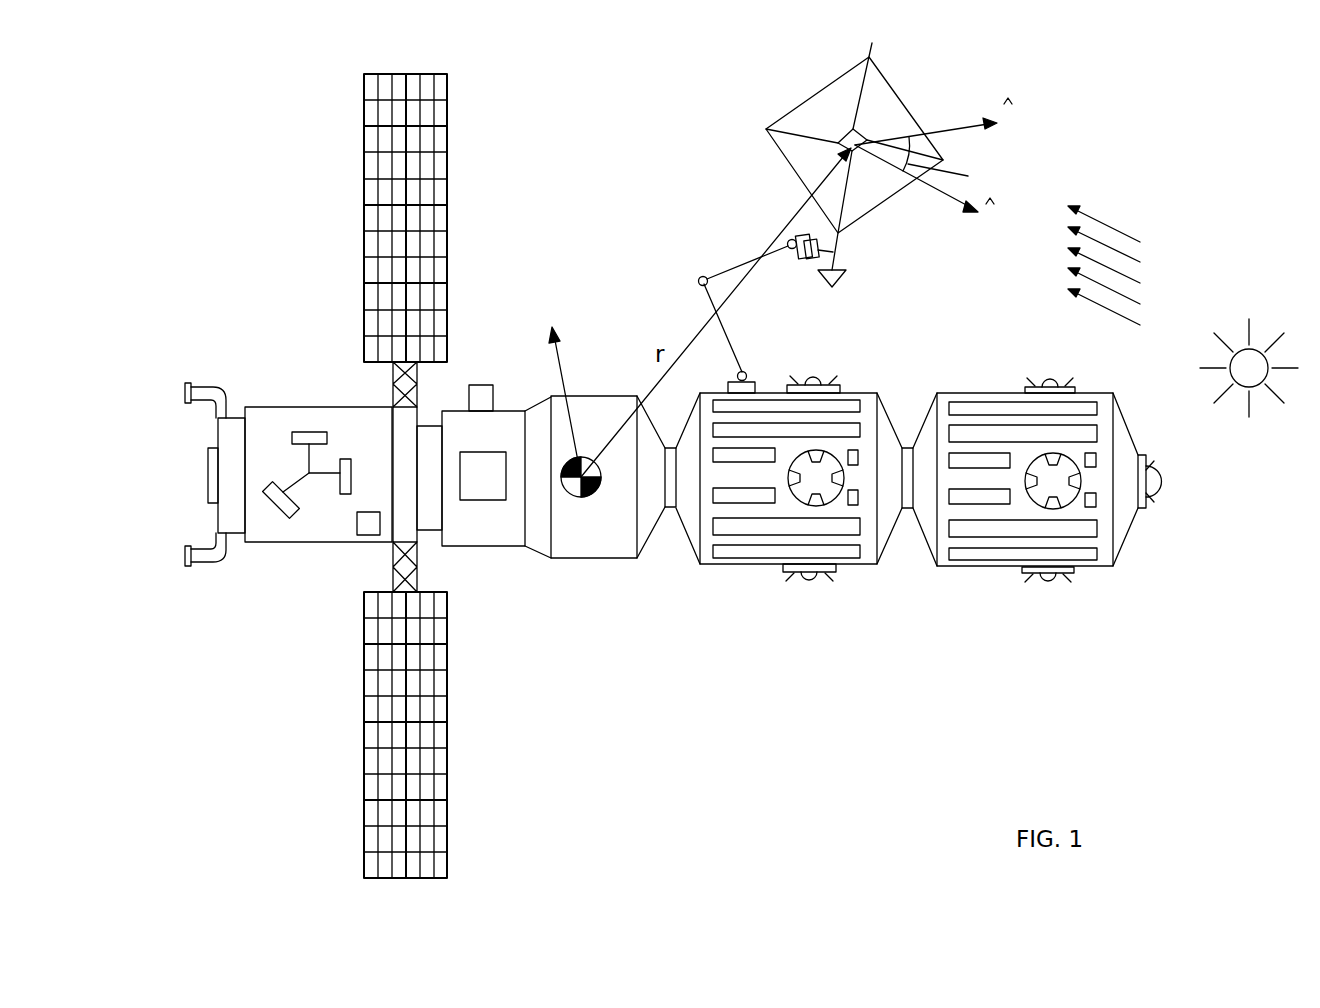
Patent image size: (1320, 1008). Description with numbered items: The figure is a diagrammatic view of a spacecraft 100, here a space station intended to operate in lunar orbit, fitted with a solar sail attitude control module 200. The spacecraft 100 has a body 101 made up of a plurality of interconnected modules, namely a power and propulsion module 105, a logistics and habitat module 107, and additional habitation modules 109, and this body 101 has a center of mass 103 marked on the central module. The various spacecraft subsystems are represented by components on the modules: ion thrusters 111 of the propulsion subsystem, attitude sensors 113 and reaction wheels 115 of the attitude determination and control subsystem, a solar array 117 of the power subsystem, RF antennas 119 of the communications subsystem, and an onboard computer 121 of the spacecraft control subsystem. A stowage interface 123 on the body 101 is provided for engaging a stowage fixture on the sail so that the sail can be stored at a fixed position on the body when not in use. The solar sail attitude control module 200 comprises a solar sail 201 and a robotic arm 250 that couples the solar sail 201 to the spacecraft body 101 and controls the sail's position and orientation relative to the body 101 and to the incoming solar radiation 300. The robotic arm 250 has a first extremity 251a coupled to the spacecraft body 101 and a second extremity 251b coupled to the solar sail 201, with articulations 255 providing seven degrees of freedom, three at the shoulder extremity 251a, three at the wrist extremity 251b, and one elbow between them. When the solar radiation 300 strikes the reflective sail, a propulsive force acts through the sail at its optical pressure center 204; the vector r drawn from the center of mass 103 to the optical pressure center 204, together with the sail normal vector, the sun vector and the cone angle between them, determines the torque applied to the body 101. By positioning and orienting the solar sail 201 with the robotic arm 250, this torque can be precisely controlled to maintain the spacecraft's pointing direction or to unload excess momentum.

The spacecraft 100 is at (181, 288).
The body 101 is at (600, 548).
The center of mass 103 is at (581, 477).
The power and propulsion module 105 is at (264, 534).
The logistics and habitat module 107 is at (538, 540).
The additional habitation modules 109 is at (853, 525).
The ion thrusters 111 is at (160, 488).
The attitude sensors 113 is at (366, 523).
The reaction wheels 115 is at (284, 462).
The solar array 117 is at (383, 188).
The RF antennas 119 is at (482, 395).
The onboard computer 121 is at (481, 489).
The stowage interface 123 is at (1047, 575).
The solar sail attitude control module 200 is at (697, 150).
The solar sail 201 is at (803, 113).
The optical pressure center 204 is at (863, 138).
The robotic arm 250 is at (708, 295).
The first extremity 251a is at (750, 373).
The second extremity 251b is at (798, 259).
The articulations 255 is at (702, 276).
The solar radiation 300 is at (1157, 229).